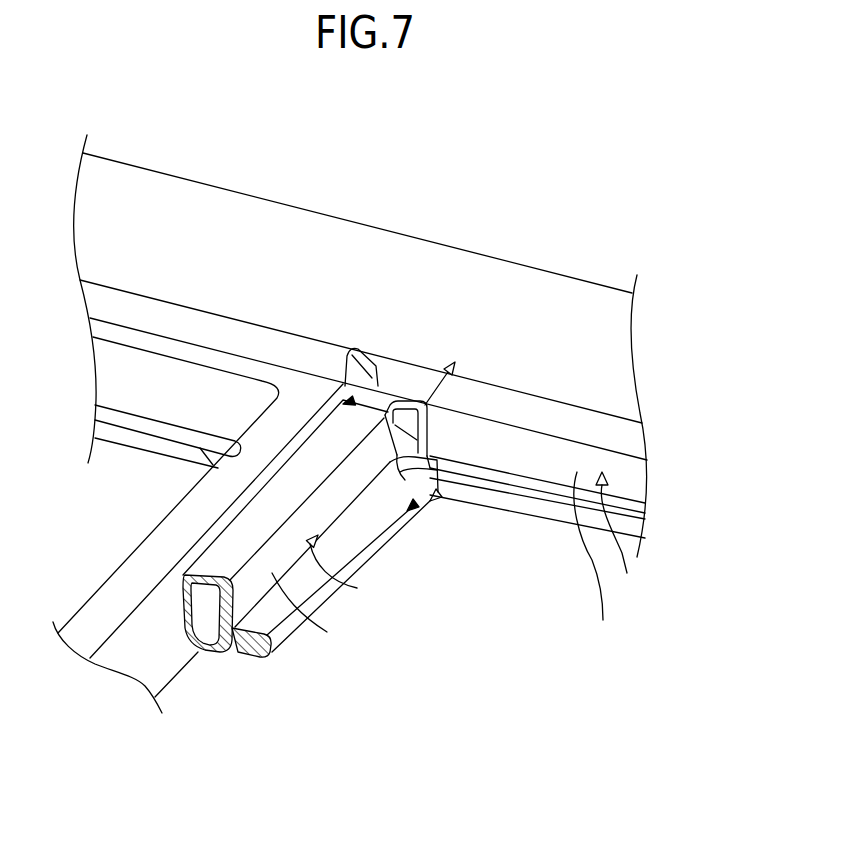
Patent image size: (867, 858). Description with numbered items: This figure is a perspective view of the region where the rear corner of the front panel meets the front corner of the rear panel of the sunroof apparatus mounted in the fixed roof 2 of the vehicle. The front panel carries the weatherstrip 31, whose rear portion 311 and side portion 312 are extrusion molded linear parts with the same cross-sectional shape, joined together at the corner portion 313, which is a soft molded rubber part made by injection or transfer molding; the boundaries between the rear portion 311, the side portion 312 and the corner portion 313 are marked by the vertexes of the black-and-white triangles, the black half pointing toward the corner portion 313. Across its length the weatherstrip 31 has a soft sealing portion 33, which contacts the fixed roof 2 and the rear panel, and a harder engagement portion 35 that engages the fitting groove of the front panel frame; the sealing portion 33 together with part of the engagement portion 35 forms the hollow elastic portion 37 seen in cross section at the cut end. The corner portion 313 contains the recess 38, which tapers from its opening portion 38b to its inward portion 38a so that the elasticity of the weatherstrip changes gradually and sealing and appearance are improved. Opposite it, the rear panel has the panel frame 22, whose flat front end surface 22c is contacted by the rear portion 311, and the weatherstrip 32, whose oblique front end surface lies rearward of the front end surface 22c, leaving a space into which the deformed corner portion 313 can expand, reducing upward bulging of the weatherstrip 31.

The fixed roof 2 is at (348, 242).
The panel frame 22 is at (167, 548).
The front end surface 22c is at (137, 662).
The weatherstrip 31 is at (414, 511).
The rear portion 311 is at (329, 612).
The side portion 312 is at (537, 558).
The corner portion 313 is at (385, 360).
The weatherstrip 32 is at (213, 322).
The sealing portion 33 is at (633, 438).
The engagement portion 35 is at (627, 530).
The hollow elastic portion 37 is at (203, 622).
The recess 38 is at (522, 523).
The inward portion 38a is at (433, 427).
The opening portion 38b is at (413, 437).